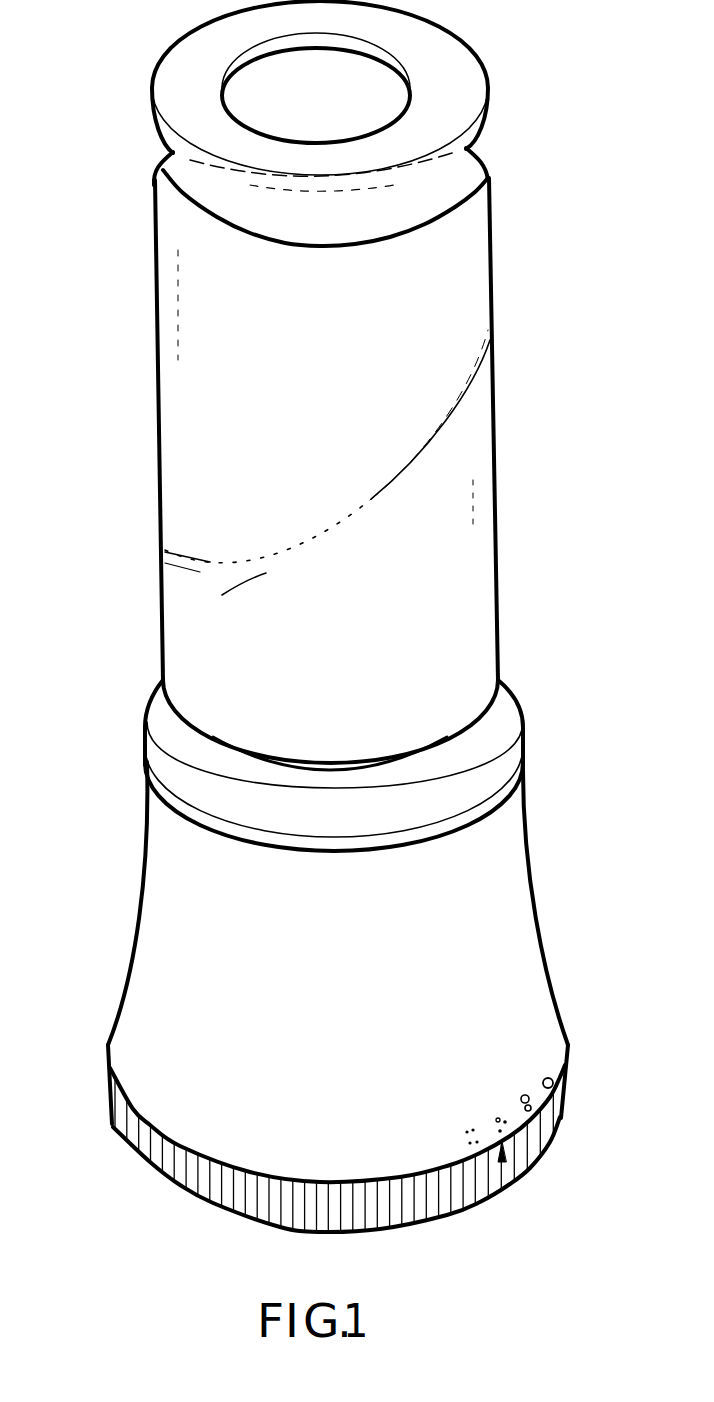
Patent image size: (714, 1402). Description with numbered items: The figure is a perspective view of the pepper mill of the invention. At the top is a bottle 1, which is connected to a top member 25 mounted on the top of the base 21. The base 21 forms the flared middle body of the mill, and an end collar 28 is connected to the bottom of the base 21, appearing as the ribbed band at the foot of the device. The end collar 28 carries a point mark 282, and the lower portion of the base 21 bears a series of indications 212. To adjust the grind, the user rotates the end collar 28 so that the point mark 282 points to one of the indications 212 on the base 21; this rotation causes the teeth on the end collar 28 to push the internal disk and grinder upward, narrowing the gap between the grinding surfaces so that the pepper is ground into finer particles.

The bottle 1 is at (472, 465).
The top member 25 is at (163, 722).
The base 21 is at (157, 980).
The end collar 28 is at (117, 1127).
The indications 212 is at (515, 1118).
The point mark 282 is at (503, 1160).